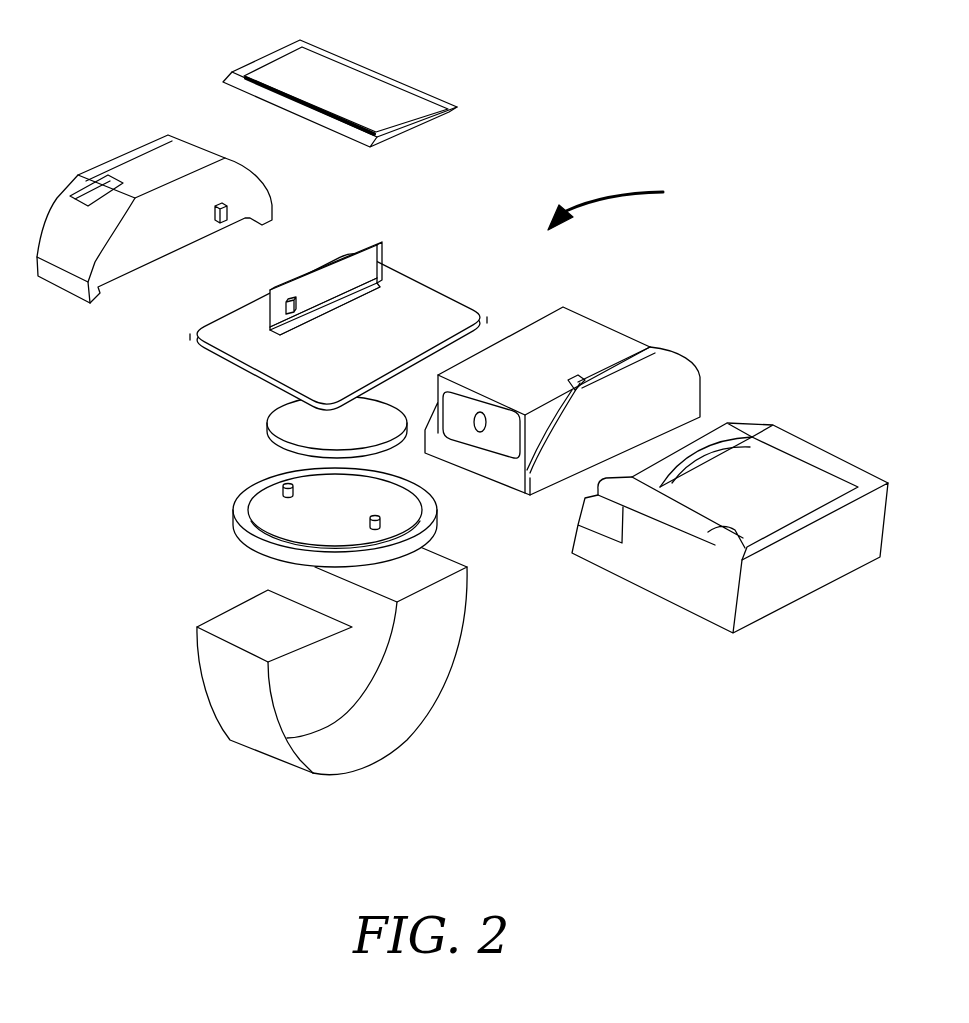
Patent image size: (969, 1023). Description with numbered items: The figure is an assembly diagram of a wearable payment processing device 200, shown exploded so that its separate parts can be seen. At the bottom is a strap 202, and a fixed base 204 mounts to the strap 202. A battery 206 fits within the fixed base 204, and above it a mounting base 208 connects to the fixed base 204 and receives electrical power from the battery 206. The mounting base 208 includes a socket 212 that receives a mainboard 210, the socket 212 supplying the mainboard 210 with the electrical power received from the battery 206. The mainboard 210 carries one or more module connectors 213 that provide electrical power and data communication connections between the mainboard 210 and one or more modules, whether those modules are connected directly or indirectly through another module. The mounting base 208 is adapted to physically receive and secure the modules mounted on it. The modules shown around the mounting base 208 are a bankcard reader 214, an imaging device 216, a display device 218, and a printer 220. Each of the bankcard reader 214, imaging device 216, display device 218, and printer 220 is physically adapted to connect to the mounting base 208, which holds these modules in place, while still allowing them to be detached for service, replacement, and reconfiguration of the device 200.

The wearable payment processing device 200 is at (636, 206).
The strap 202 is at (457, 635).
The fixed base 204 is at (238, 510).
The battery 206 is at (285, 432).
The mounting base 208 is at (213, 333).
The mainboard 210 is at (359, 275).
The socket 212 is at (372, 290).
The module connectors 213 is at (288, 299).
The bankcard reader 214 is at (202, 158).
The imaging device 216 is at (573, 322).
The display device 218 is at (427, 107).
The printer 220 is at (793, 440).